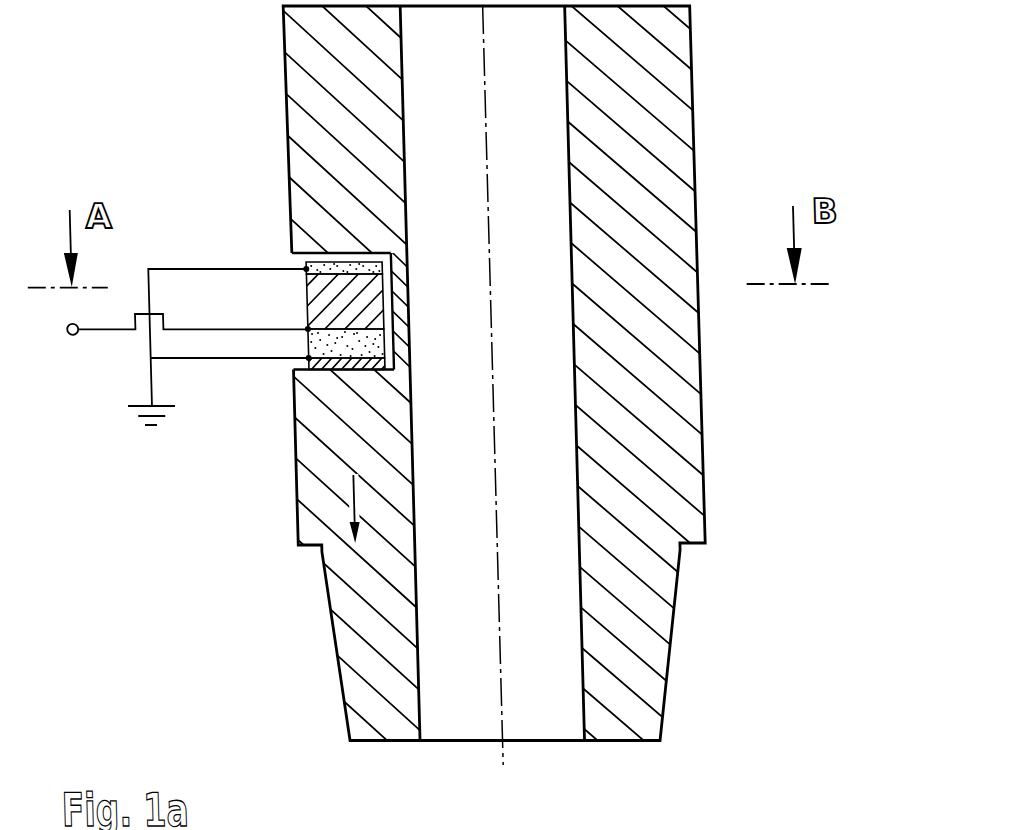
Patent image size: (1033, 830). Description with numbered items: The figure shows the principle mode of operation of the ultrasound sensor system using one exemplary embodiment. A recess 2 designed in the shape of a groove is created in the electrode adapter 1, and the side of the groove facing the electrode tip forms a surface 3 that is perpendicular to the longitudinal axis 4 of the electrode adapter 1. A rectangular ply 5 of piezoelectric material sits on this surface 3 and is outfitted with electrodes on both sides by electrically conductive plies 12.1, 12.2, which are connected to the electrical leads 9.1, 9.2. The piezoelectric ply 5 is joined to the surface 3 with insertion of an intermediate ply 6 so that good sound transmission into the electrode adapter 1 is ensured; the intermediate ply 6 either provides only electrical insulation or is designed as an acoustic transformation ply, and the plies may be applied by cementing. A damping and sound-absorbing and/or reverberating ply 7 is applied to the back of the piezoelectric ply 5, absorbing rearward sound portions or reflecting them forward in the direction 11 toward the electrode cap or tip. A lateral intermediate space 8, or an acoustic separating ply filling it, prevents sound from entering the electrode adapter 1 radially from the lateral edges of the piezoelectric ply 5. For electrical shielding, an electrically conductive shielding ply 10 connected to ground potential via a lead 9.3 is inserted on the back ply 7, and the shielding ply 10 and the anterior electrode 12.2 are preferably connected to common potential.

The electrode adapter 1 is at (675, 122).
The recess 2 is at (305, 253).
The surface 3 is at (328, 371).
The longitudinal axis 4 is at (485, 248).
The piezoelectric ply 5 is at (367, 343).
The intermediate ply 6 is at (355, 371).
The damping and sound-absorbing and/or reverberating ply 7 is at (378, 266).
The lateral intermediate space 8 is at (364, 285).
The electrical lead 9.1 is at (244, 327).
The electrical lead 9.2 is at (268, 360).
The lead 9.3 is at (251, 268).
The electrically conductive shielding ply 10 is at (356, 252).
The direction 11 is at (354, 493).
The electrically conductive ply 12.1 is at (379, 330).
The electrically conductive ply 12.2 is at (390, 363).